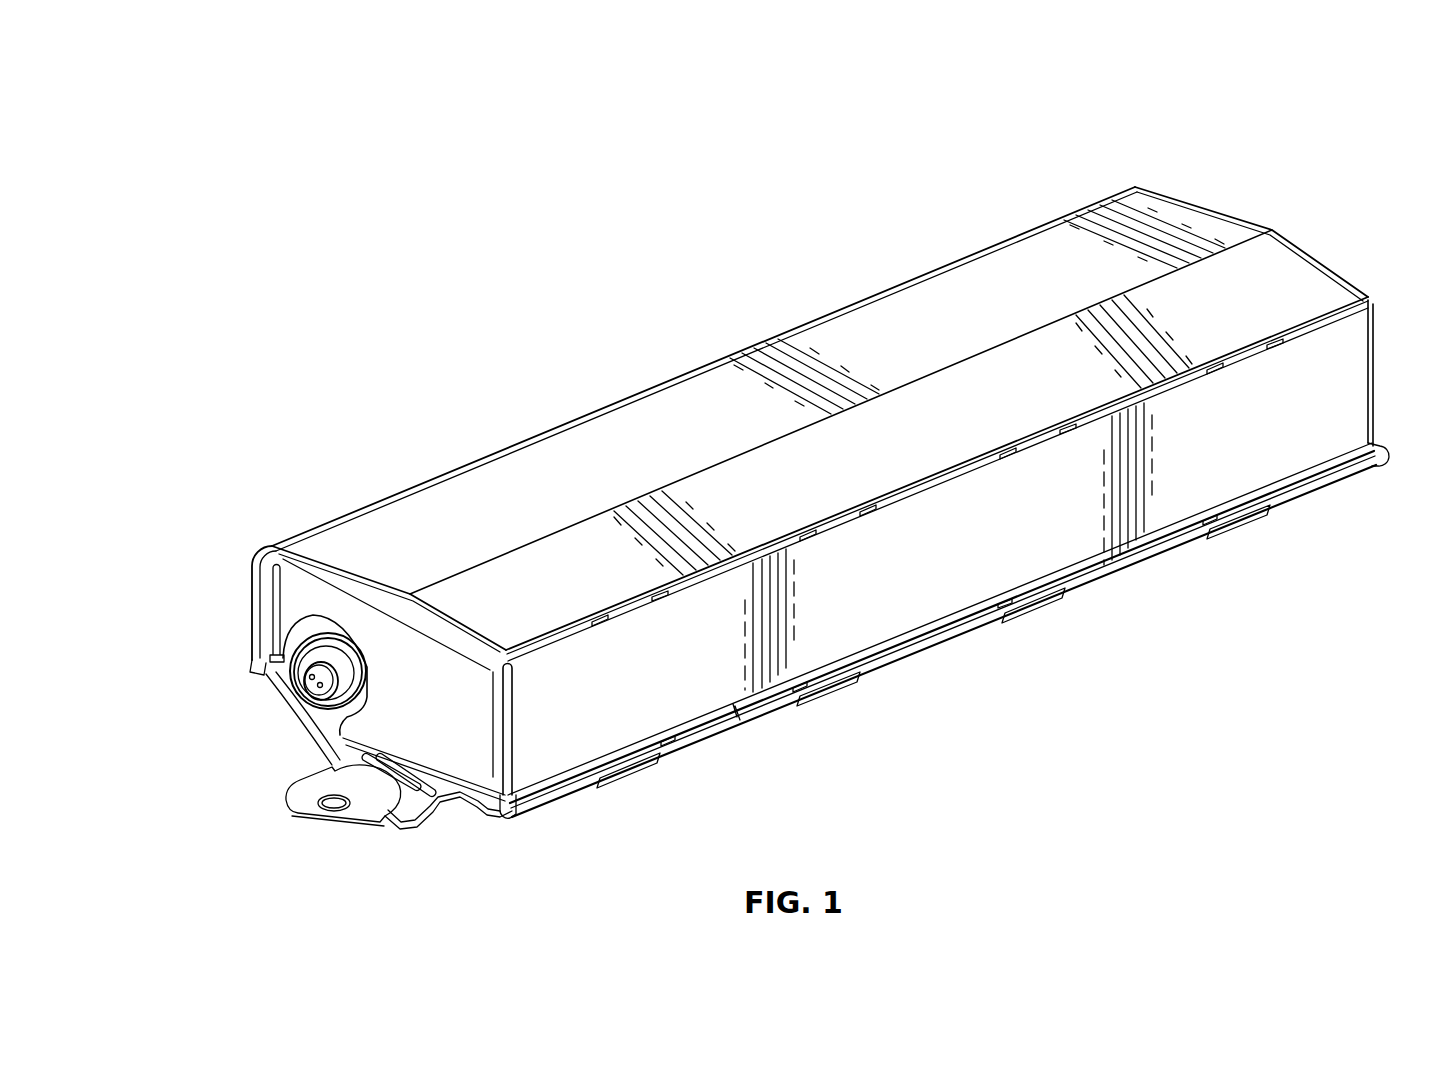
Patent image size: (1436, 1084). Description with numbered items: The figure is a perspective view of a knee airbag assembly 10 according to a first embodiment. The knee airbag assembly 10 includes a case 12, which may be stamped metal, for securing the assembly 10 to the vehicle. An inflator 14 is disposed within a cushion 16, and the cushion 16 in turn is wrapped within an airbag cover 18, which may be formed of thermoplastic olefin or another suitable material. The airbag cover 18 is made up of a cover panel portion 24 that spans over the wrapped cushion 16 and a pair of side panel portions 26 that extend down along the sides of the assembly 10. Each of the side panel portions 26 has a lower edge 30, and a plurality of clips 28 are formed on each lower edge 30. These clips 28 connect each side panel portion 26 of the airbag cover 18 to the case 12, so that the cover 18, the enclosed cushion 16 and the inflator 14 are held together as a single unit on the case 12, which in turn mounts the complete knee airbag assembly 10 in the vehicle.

The knee airbag assembly 10 is at (1316, 118).
The case 12 is at (428, 822).
The inflator 14 is at (303, 676).
The cushion 16 is at (293, 597).
The airbag cover 18 is at (580, 410).
The cover panel portion 24 is at (738, 392).
The side panel portions 26 is at (254, 600).
The clips 28 is at (625, 782).
The lower edge 30 is at (738, 712).